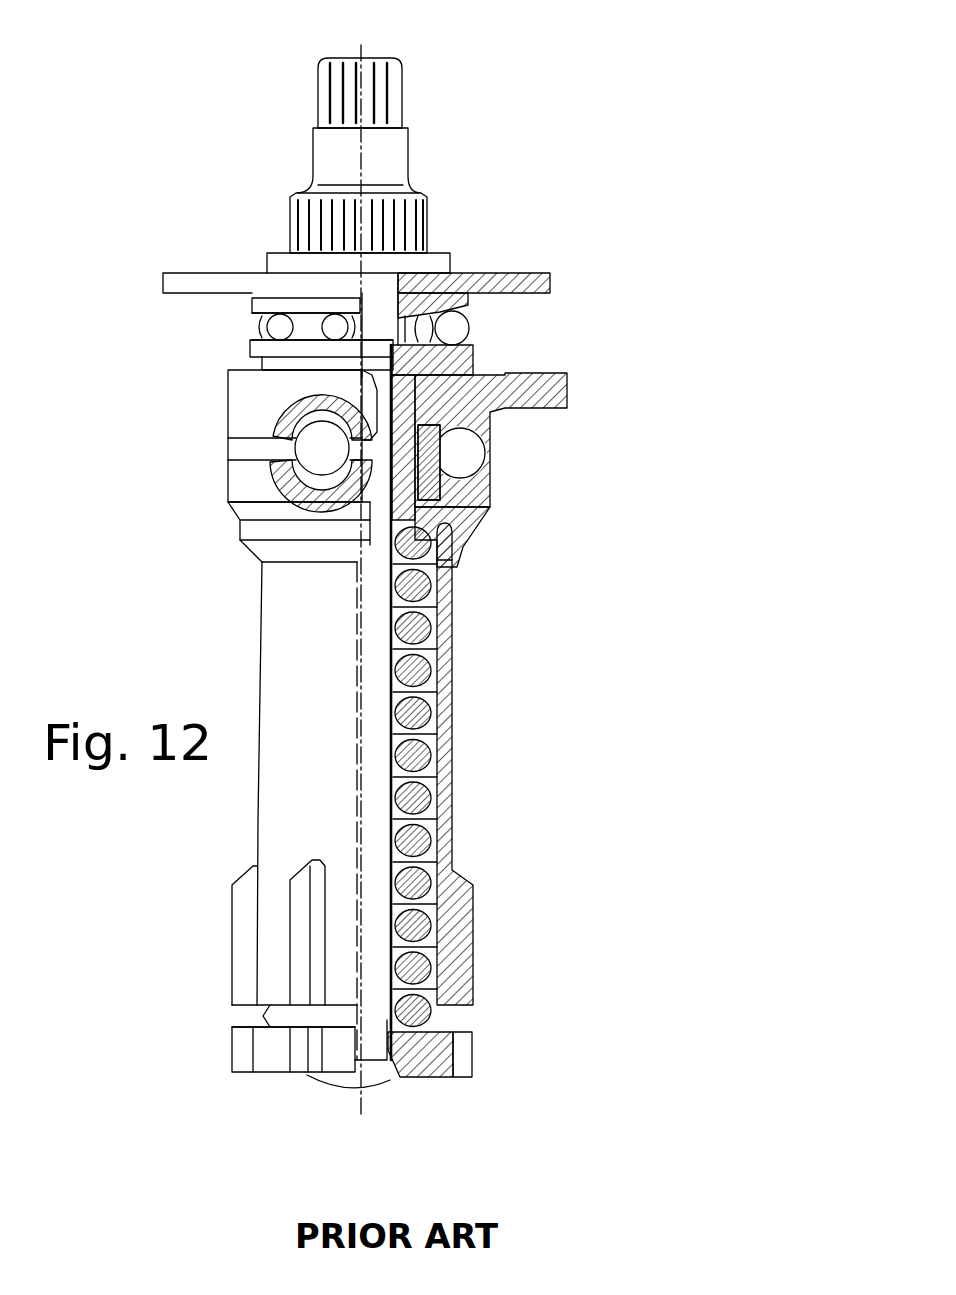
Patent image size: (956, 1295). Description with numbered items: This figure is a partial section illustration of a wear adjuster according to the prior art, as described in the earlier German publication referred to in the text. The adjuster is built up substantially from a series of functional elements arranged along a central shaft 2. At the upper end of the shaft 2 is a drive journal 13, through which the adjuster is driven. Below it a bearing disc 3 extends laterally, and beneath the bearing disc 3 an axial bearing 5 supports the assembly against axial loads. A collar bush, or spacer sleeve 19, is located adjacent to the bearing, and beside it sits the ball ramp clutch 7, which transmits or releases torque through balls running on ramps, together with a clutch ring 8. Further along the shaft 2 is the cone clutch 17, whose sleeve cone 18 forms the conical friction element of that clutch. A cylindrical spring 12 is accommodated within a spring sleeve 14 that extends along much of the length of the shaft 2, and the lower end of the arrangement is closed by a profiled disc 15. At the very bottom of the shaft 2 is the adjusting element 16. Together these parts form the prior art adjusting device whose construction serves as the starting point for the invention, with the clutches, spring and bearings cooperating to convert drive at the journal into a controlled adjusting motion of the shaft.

The shaft 2 is at (398, 163).
The bearing disc 3 is at (517, 277).
The axial bearing 5 is at (492, 327).
The ball ramp clutch 7 is at (535, 445).
The clutch ring 8 is at (475, 538).
The cylindrical spring 12 is at (437, 1021).
The drive journal 13 is at (383, 97).
The spring sleeve 14 is at (452, 800).
The profiled disc 15 is at (437, 1077).
The adjusting element 16 is at (327, 1088).
The cone clutch 17 is at (523, 568).
The sleeve cone 18 is at (453, 563).
The spacer sleeve 19 is at (470, 350).